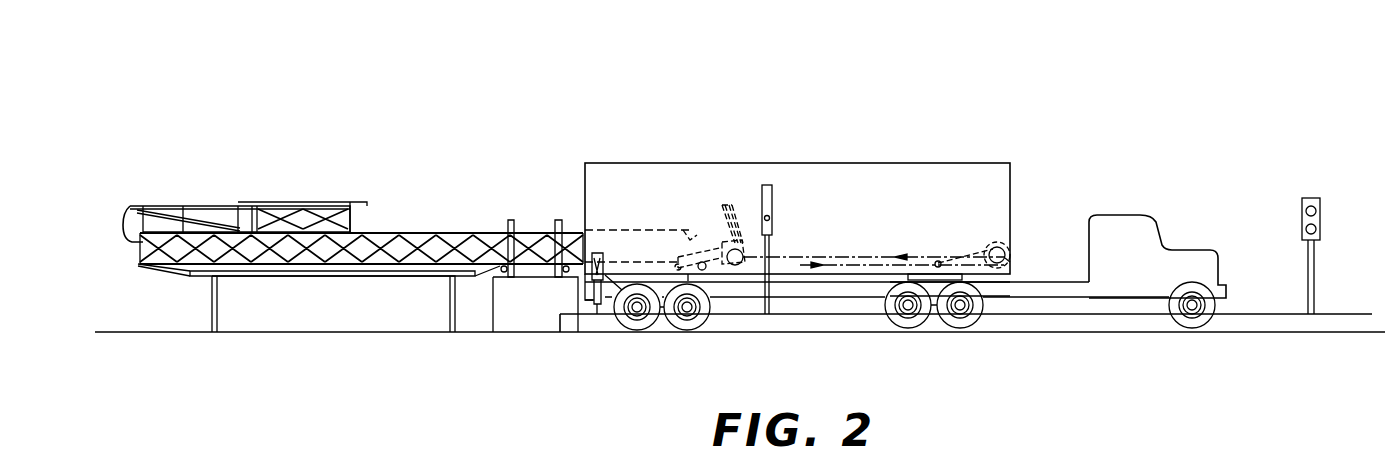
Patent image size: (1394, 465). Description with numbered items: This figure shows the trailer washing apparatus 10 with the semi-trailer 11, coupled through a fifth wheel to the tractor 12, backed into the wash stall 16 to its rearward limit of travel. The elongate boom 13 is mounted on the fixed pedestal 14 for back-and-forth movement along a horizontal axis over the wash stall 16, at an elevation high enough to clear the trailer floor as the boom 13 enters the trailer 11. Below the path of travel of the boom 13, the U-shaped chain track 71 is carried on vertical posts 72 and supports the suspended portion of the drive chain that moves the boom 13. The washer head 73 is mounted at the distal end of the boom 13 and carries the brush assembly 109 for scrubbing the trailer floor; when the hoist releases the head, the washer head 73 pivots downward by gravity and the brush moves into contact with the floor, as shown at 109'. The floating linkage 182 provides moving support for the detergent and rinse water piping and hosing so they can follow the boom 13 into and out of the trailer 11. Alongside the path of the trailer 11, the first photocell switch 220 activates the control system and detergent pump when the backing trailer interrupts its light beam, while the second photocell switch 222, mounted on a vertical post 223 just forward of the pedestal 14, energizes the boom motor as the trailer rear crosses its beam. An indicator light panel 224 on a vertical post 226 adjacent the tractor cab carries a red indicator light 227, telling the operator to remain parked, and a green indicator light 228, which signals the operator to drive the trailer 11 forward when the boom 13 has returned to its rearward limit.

The apparatus 10 is at (440, 172).
The semi-trailer 11 is at (928, 172).
The tractor 12 is at (1147, 190).
The boom 13 is at (415, 227).
The pedestal 14 is at (493, 305).
The wash stall 16 is at (840, 292).
The chain track 71 is at (340, 277).
The vertical posts 72 is at (212, 308).
The washer head 73 is at (728, 203).
The brush assembly 109 is at (1018, 237).
The brush assembly lowered position 109' is at (1035, 252).
The floating linkage 182 is at (300, 176).
The first photocell switch 220 is at (773, 218).
The second photocell switch 222 is at (600, 253).
The vertical post 223 is at (594, 306).
The indicator light panel 224 is at (1303, 210).
The vertical post 226 is at (1314, 275).
The red indicator light 227 is at (1305, 208).
The green indicator light 228 is at (1303, 228).